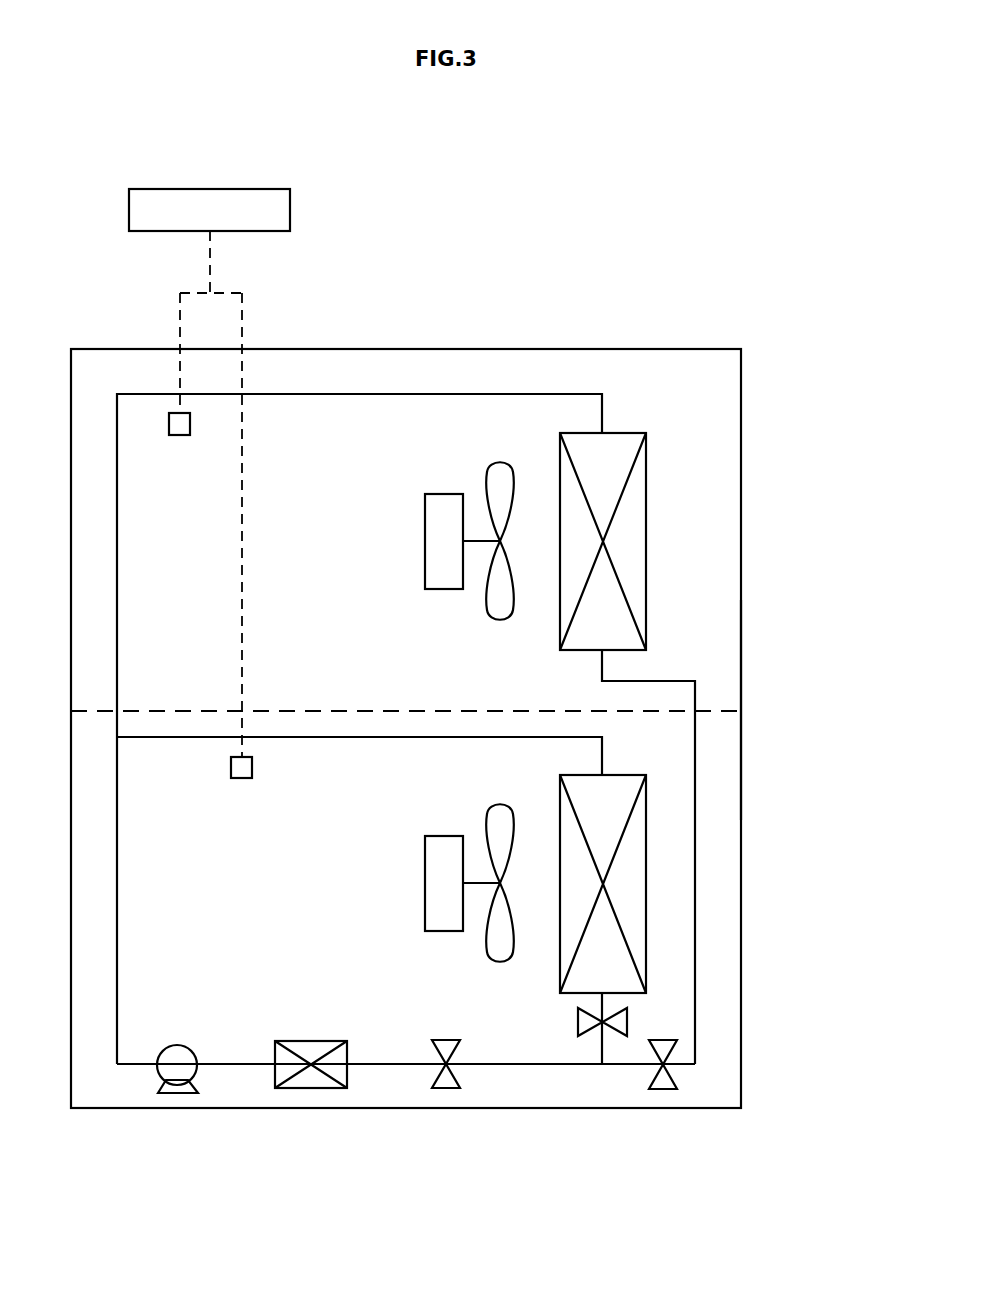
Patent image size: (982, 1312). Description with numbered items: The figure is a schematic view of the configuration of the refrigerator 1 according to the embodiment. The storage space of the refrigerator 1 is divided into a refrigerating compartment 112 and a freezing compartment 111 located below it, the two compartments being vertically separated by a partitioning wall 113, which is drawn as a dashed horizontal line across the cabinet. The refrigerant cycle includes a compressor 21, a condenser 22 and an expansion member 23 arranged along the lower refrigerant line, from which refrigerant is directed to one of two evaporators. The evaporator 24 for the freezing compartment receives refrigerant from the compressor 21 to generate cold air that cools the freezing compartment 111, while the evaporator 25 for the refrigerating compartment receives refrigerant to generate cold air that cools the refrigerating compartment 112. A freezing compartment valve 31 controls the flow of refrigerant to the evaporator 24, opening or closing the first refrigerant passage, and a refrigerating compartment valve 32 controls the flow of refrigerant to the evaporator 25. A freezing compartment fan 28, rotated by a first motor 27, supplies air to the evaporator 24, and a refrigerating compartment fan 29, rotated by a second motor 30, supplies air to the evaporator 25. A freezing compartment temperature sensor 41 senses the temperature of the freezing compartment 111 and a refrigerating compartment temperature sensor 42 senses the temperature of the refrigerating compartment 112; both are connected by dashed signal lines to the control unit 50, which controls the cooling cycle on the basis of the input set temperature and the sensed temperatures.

The refrigerator 1 is at (603, 302).
The compressor 21 is at (186, 1045).
The condenser 22 is at (312, 1040).
The expansion member 23 is at (446, 1040).
The evaporator for the freezing compartment 24 is at (648, 884).
The evaporator for the refrigerating compartment 25 is at (648, 537).
The first motor 27 is at (444, 835).
The freezing compartment fan 28 is at (500, 800).
The refrigerating compartment fan 29 is at (500, 459).
The second motor 30 is at (444, 493).
The freezing compartment valve 31 is at (627, 1022).
The refrigerating compartment valve 32 is at (662, 1092).
The freezing compartment temperature sensor 41 is at (230, 767).
The refrigerating compartment temperature sensor 42 is at (180, 437).
The control unit 50 is at (211, 188).
The freezing compartment 111 is at (743, 731).
The refrigerating compartment 112 is at (712, 362).
The partitioning wall 113 is at (655, 711).